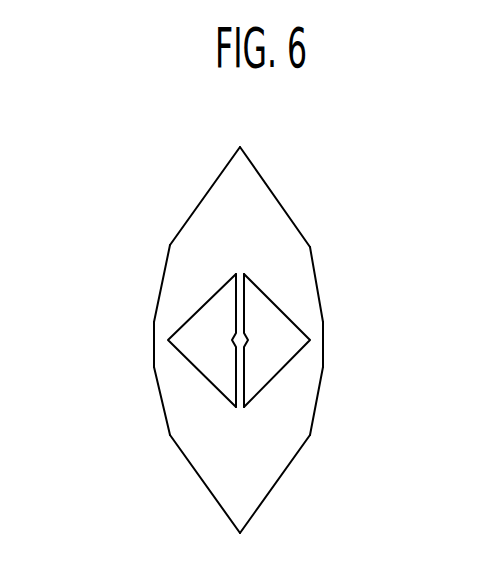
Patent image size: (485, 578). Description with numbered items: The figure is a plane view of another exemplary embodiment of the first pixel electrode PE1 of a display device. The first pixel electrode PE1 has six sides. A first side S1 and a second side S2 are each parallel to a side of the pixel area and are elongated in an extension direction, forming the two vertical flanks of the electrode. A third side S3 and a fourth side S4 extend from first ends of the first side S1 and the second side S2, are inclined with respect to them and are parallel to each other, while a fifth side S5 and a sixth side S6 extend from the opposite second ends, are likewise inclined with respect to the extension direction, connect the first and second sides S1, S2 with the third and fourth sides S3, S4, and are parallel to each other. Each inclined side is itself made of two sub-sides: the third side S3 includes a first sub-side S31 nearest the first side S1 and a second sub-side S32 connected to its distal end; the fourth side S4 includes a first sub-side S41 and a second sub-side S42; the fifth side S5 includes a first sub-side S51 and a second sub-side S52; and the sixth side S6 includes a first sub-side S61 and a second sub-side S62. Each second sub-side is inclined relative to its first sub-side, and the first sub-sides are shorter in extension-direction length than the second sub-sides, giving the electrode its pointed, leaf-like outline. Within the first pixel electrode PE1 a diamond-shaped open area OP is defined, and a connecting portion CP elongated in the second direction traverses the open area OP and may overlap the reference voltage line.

The first pixel electrode PE1 is at (330, 138).
The first side S1 is at (154, 343).
The second side S2 is at (325, 343).
The third side S3 is at (86, 162).
The first sub-side of third side S31 is at (163, 272).
The second sub-side of third side S32 is at (202, 197).
The fourth side S4 is at (391, 420).
The first sub-side of fourth side S41 is at (318, 408).
The second sub-side of fourth side S42 is at (275, 485).
The fifth side S5 is at (391, 162).
The first sub-side of fifth side S51 is at (318, 272).
The second sub-side of fifth side S52 is at (278, 197).
The sixth side S6 is at (86, 420).
The first sub-side of sixth side S61 is at (165, 408).
The second sub-side of sixth side S62 is at (205, 485).
The open area OP is at (272, 315).
The connecting portion CP is at (241, 381).